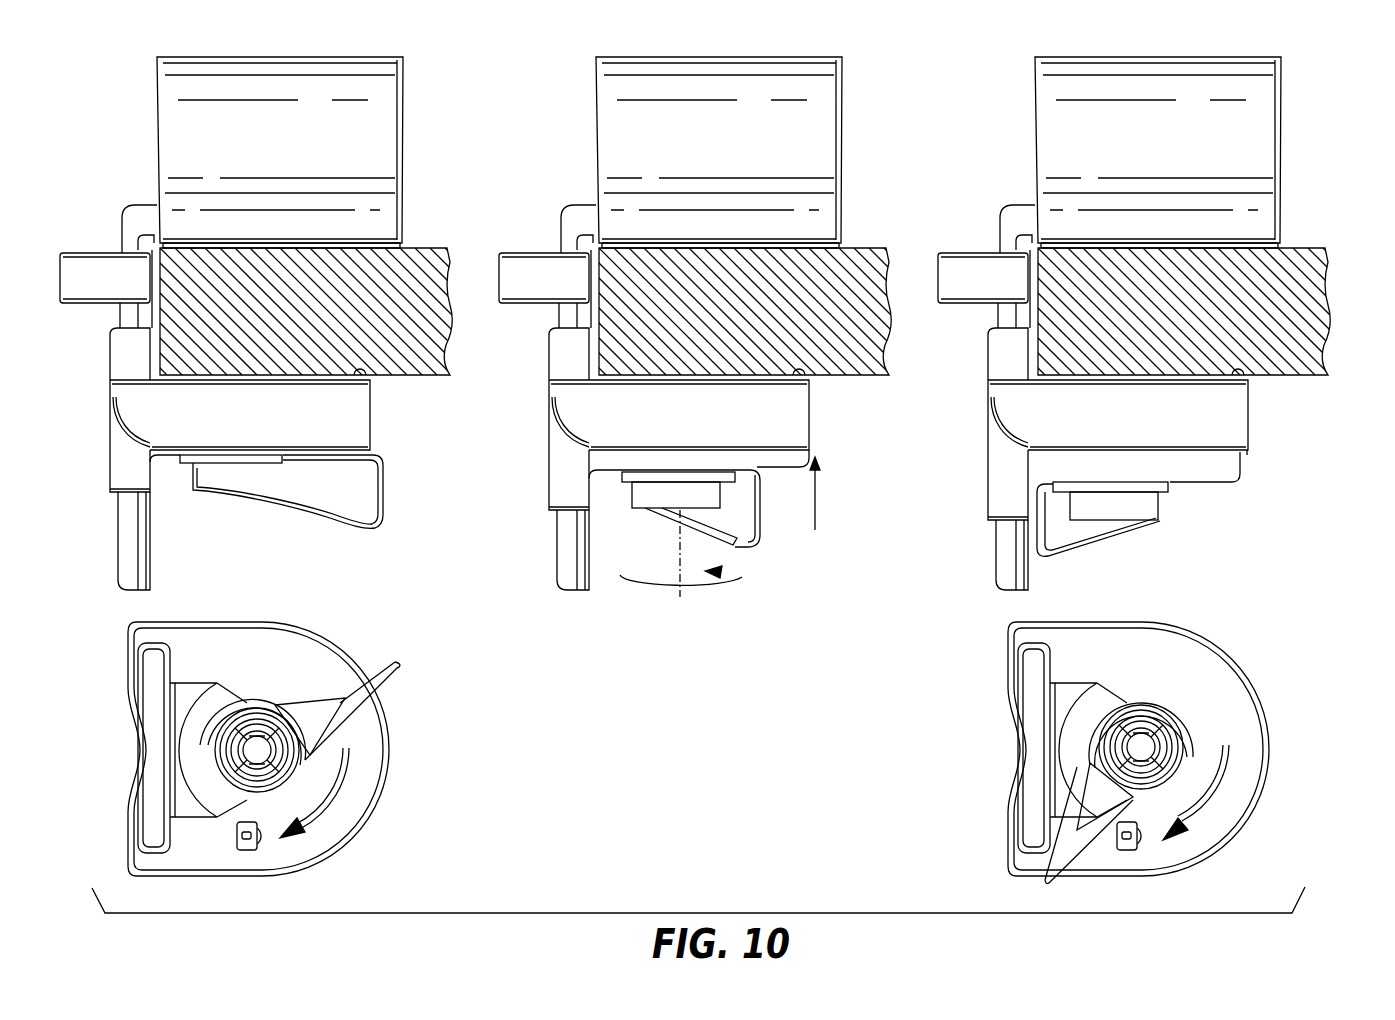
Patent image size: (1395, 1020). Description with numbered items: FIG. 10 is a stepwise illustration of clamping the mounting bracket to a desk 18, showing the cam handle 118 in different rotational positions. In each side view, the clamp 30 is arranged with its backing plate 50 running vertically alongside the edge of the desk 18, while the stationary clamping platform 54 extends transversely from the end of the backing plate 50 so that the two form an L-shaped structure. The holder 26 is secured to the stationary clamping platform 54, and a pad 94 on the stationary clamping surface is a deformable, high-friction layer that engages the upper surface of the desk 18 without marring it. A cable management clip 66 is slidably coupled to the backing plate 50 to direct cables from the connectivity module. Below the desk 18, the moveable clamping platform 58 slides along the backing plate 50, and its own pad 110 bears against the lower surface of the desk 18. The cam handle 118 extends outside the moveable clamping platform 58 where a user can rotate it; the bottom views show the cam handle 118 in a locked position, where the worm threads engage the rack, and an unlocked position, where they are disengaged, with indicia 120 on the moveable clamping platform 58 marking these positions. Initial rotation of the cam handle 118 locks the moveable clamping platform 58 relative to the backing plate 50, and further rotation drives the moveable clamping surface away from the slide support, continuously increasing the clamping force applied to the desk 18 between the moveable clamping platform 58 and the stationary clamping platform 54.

The desk 18 is at (430, 350).
The holder 26 is at (393, 92).
The clamp 30 is at (442, 394).
The backing plate 50 is at (127, 530).
The stationary clamping platform 54 is at (145, 203).
The moveable clamping platform 58 is at (390, 437).
The cable management clip 66 is at (100, 263).
The pad 94 is at (403, 248).
The pad 110 is at (360, 367).
The cam handle 118 is at (365, 507).
The indicia 120 is at (252, 850).